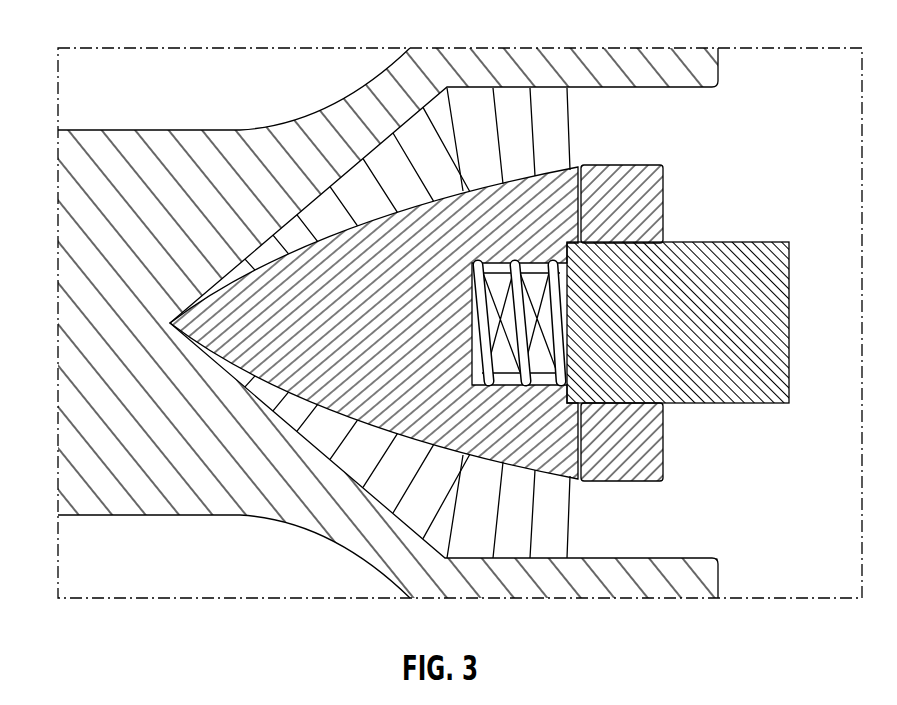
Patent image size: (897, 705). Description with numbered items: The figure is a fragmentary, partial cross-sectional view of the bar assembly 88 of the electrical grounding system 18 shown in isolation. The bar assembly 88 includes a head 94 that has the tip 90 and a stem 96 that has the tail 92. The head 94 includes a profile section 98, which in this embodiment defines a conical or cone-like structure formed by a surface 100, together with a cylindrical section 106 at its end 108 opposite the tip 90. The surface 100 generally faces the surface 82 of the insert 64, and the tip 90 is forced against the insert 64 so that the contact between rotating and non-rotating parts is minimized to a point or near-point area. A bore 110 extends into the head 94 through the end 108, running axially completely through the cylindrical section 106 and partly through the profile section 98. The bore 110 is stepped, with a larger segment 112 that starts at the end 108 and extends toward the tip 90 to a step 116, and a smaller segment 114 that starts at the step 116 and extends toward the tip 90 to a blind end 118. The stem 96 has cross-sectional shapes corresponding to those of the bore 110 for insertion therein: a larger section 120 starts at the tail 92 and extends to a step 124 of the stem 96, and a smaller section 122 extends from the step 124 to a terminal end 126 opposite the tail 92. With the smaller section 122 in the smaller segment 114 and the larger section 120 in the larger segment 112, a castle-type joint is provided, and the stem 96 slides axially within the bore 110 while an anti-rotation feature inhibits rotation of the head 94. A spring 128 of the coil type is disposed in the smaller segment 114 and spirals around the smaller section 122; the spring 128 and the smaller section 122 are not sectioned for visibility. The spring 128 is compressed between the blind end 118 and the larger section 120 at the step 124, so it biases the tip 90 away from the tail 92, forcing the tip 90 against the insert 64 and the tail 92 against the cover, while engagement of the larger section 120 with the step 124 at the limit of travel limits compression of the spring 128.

The electrical grounding system 18 is at (788, 40).
The bar assembly 88 is at (769, 124).
The insert 64 is at (183, 190).
The profile section 98 is at (406, 260).
The tip 90 is at (170, 323).
The tail 92 is at (790, 342).
The stem 96 is at (771, 408).
The head 94 is at (327, 417).
The surface 100 is at (405, 435).
The surface 82 is at (407, 530).
The cylindrical section 106 is at (655, 166).
The end 108 is at (666, 203).
The bore 110 is at (646, 395).
The larger segment 112 is at (641, 250).
The smaller segment 114 is at (573, 283).
The step 116 is at (645, 405).
The blind end 118 is at (473, 358).
The larger section 120 is at (764, 382).
The smaller section 122 is at (528, 265).
The step 124 is at (552, 265).
The terminal end 126 is at (470, 297).
The spring 128 is at (514, 266).